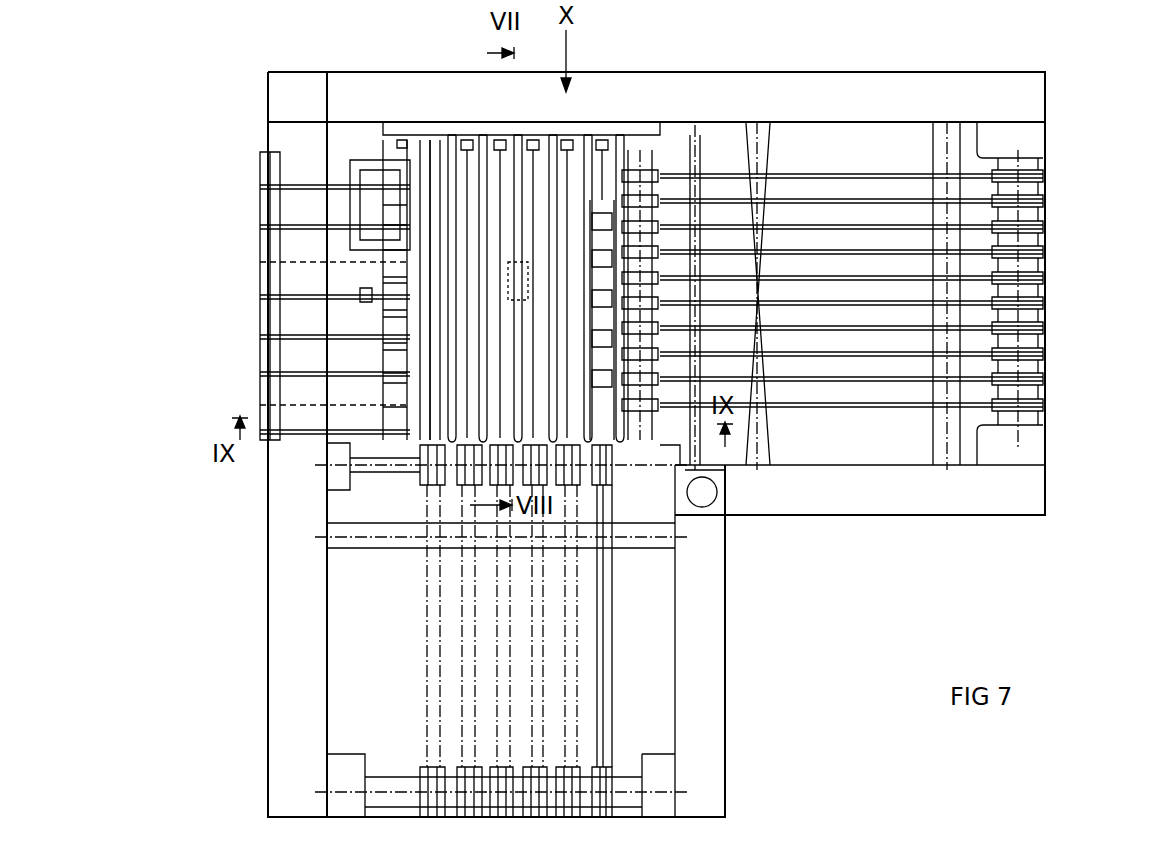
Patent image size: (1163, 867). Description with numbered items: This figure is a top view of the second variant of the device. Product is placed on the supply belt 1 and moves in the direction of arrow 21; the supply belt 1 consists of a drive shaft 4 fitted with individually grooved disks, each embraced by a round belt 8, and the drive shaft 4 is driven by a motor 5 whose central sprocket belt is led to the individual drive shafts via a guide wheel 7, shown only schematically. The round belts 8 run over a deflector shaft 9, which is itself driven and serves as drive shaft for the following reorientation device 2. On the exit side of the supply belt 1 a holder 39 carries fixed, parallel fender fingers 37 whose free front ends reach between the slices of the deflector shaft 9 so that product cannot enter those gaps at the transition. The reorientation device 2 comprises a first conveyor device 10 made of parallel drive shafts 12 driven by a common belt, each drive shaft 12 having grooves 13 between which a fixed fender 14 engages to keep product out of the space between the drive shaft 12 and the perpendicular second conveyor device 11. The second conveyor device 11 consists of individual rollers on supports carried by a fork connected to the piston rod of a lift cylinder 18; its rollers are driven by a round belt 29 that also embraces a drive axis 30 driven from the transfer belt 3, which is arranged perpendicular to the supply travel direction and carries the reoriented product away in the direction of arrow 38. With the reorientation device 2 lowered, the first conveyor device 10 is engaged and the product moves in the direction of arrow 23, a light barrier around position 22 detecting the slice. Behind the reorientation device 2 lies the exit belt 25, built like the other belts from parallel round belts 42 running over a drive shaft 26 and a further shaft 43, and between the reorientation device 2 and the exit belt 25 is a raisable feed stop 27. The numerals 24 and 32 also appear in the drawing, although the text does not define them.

The supply belt 1 is at (914, 108).
The reorientation device 2 is at (589, 70).
The transfer belt 3 is at (700, 644).
The drive shaft 4 is at (1050, 419).
The motor 5 is at (1010, 515).
The guide wheel 7 is at (720, 500).
The round belt 8 is at (906, 385).
The deflector shaft 9 is at (682, 138).
The first conveyor device 10 is at (457, 138).
The second conveyor device 11 is at (462, 138).
The drive shaft 12 is at (617, 138).
The grooves 13 is at (632, 138).
The fender 14 is at (660, 138).
The lift cylinder 18 is at (528, 276).
The arrow 21 is at (880, 296).
The position 22 is at (490, 232).
The arrow 23 is at (446, 294).
The movement direction 24 is at (535, 374).
The exit belt 25 is at (247, 174).
The drive shaft 26 is at (428, 140).
The feed stop 27 is at (433, 135).
The round belt 29 is at (556, 276).
The drive axis 30 is at (370, 322).
The roller set 32 is at (400, 445).
The fender fingers 37 is at (690, 440).
The arrow 38 is at (535, 605).
The holder 39 is at (708, 138).
The round belts 42 is at (366, 445).
The shaft 43 is at (268, 345).